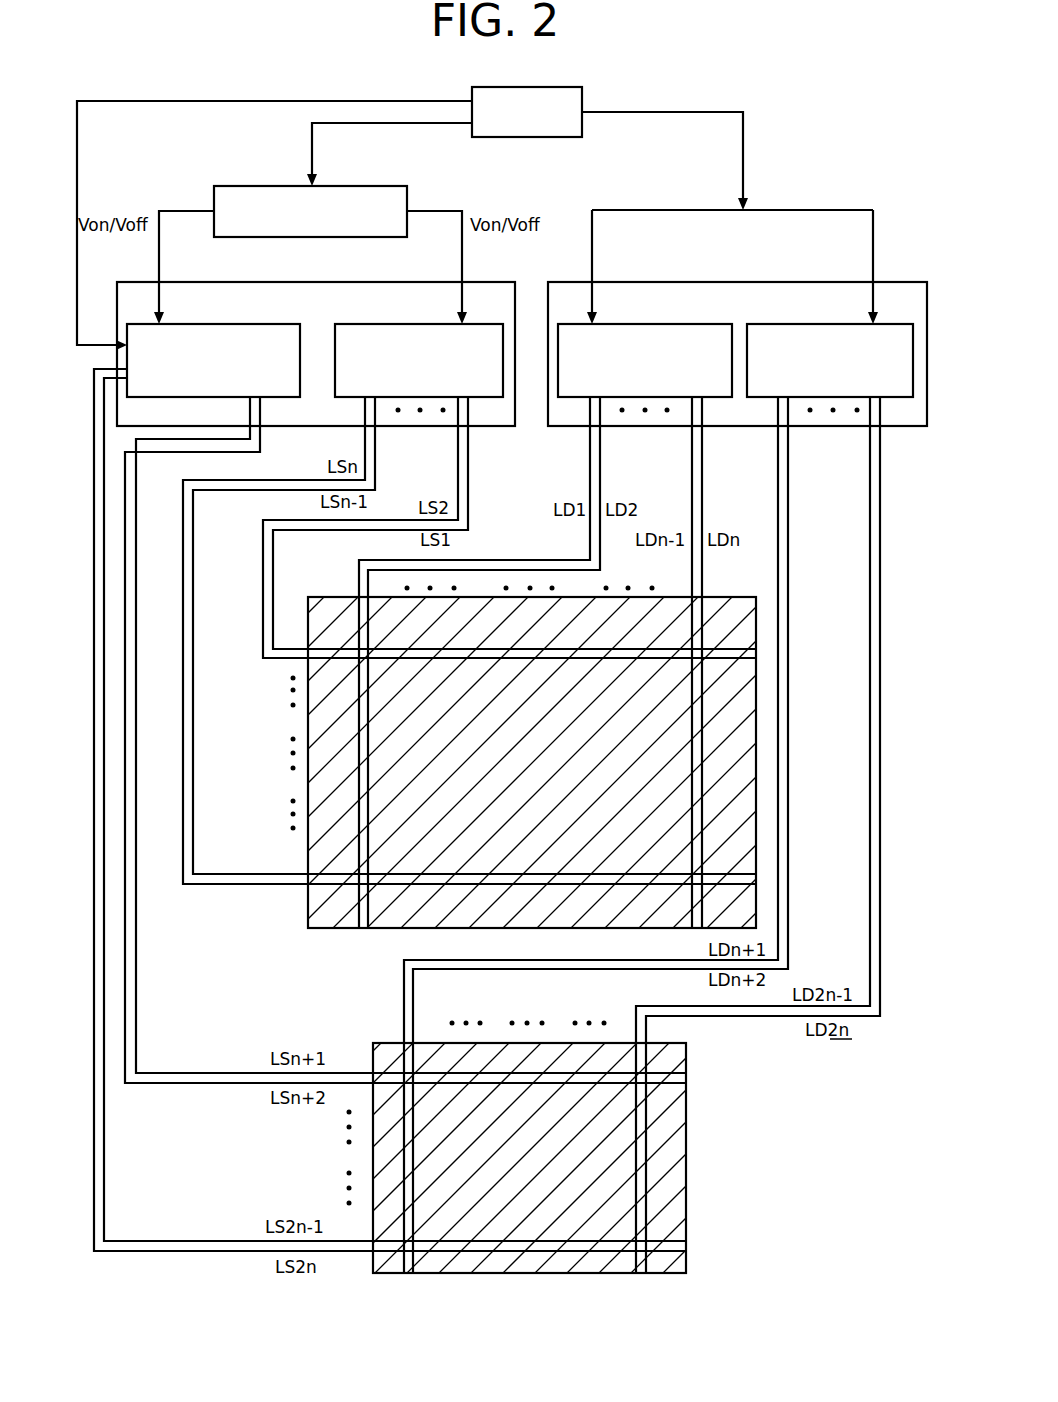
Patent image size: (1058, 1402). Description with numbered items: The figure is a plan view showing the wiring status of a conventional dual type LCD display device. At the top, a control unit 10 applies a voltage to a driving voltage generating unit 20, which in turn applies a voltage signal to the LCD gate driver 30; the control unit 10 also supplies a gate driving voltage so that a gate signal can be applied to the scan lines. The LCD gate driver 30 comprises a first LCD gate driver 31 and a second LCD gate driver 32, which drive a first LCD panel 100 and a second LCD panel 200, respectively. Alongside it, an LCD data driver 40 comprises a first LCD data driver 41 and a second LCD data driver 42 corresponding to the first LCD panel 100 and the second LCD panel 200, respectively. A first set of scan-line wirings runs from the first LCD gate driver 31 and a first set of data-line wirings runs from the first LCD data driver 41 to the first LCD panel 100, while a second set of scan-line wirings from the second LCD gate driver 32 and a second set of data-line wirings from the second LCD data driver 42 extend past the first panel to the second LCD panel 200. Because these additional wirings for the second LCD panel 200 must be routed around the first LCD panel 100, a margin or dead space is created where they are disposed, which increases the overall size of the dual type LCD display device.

The control unit 10 is at (562, 87).
The driving voltage generating unit 20 is at (388, 186).
The LCD gate driver 30 is at (490, 282).
The first LCD gate driver 31 is at (478, 324).
The second LCD gate driver 32 is at (284, 324).
The LCD data driver 40 is at (897, 282).
The first LCD data driver 41 is at (726, 324).
The second LCD data driver 42 is at (897, 324).
The first LCD panel 100 is at (727, 597).
The second LCD panel 200 is at (686, 1157).